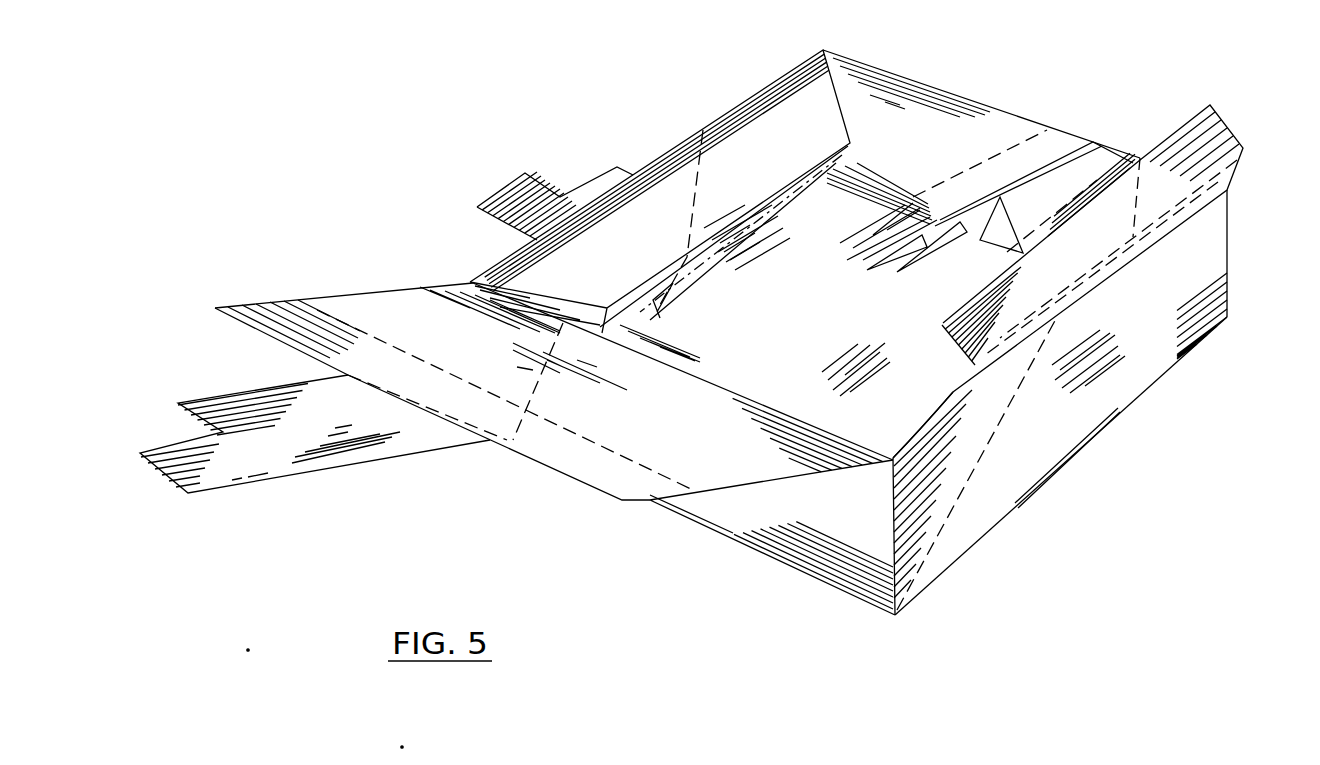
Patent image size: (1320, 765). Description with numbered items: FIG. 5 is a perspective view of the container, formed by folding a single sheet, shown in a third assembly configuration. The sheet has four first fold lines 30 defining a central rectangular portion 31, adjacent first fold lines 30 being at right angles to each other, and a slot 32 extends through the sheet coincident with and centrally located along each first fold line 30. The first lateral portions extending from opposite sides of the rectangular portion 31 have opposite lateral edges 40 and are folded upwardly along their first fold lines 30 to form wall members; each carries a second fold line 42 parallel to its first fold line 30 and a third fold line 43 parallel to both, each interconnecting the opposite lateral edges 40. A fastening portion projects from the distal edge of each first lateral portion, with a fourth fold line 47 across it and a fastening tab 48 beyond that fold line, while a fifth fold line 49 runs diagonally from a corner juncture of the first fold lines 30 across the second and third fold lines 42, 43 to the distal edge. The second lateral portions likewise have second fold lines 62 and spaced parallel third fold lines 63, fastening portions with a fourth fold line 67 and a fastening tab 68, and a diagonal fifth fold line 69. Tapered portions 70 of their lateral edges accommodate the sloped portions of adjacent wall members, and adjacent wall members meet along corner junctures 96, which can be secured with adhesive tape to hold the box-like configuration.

The first fold lines 30 is at (755, 553).
The rectangular portion 31 is at (816, 302).
The slot 32 is at (685, 515).
The opposite lateral edges 40 is at (393, 286).
The second fold line 42 is at (932, 85).
The third fold line 43 is at (865, 192).
The fourth fold line 47 is at (380, 417).
The fastening tab 48 is at (254, 452).
The fifth fold line 49 is at (545, 378).
The second fold lines 62 is at (753, 93).
The third fold lines 63 is at (803, 175).
The fourth fold line 67 is at (707, 282).
The fastening tab 68 is at (560, 203).
The fifth fold line 69 is at (697, 193).
The tapered portions 70 is at (837, 90).
The corner junctures 96 is at (1229, 258).